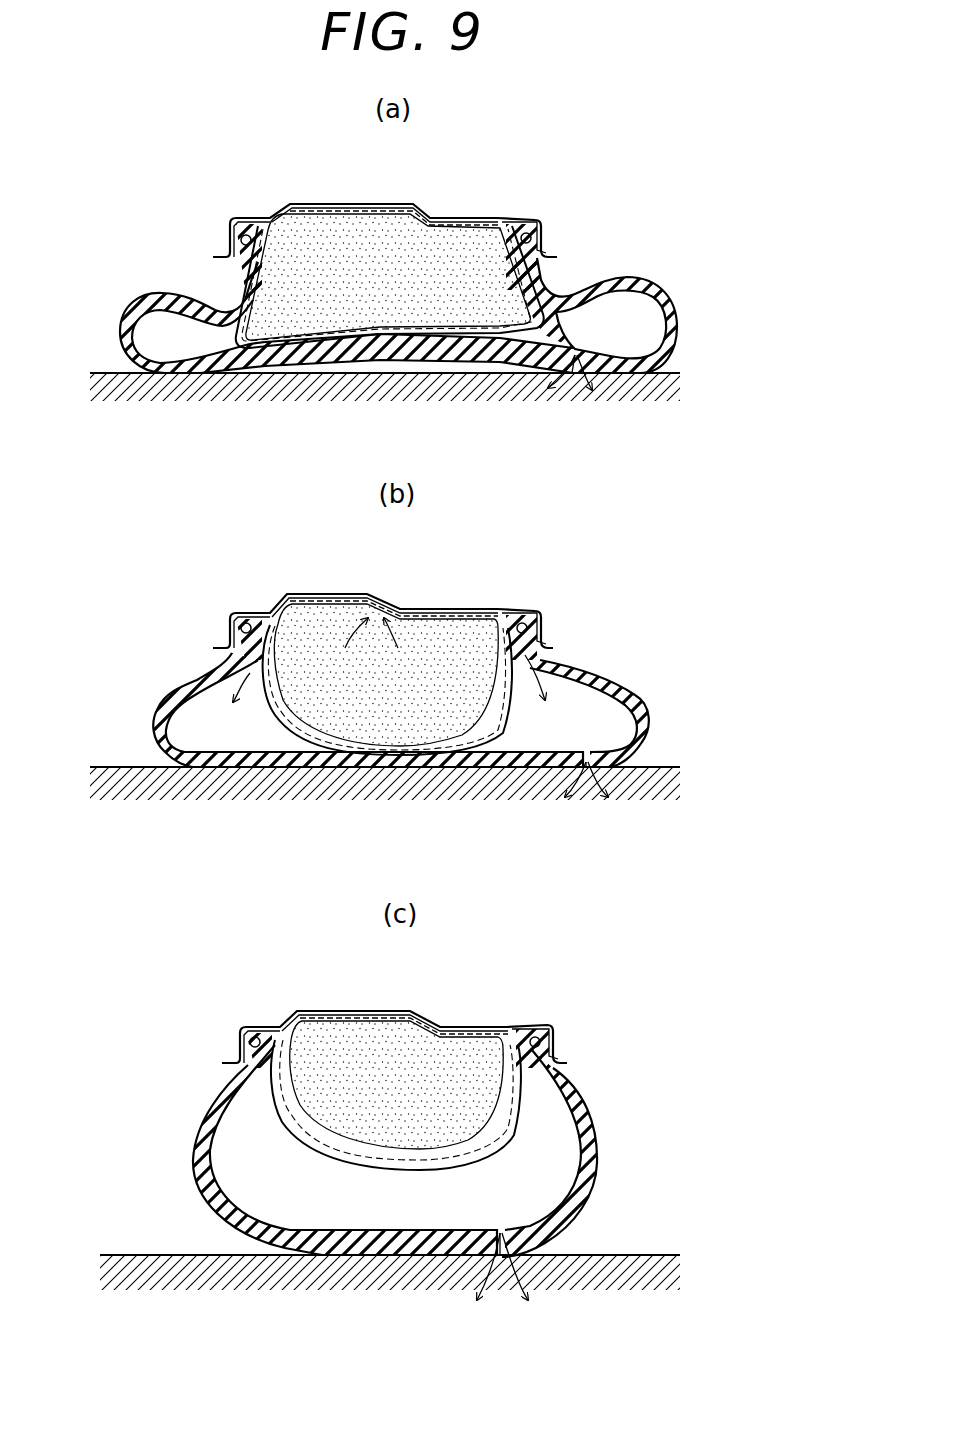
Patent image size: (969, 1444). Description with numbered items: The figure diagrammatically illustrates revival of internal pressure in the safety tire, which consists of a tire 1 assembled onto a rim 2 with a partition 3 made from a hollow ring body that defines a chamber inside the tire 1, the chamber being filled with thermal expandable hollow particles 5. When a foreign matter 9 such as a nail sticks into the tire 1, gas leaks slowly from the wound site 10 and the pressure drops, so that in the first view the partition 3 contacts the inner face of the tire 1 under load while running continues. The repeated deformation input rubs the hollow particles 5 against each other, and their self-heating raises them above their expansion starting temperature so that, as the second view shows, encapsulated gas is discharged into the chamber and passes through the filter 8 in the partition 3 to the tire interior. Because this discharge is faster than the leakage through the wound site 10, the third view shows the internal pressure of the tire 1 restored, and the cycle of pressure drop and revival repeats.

The tire 1 is at (672, 290).
The rim 2 is at (470, 222).
The partition 3 is at (245, 330).
The thermal expandable hollow particles 5 is at (337, 243).
The filter 8 is at (386, 203).
The foreign matter 9 is at (576, 355).
The wound site 10 is at (572, 373).